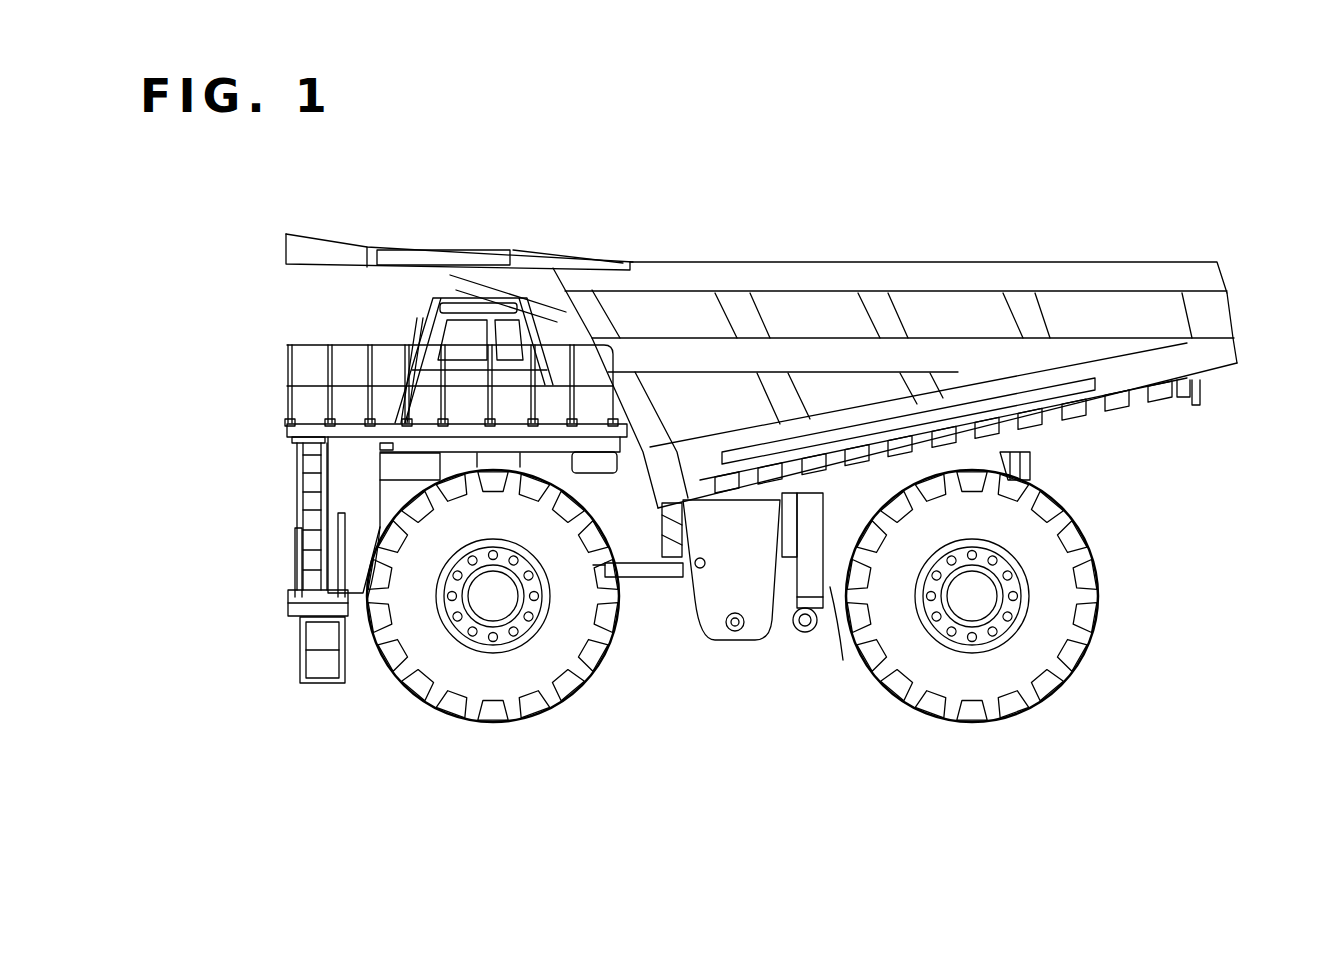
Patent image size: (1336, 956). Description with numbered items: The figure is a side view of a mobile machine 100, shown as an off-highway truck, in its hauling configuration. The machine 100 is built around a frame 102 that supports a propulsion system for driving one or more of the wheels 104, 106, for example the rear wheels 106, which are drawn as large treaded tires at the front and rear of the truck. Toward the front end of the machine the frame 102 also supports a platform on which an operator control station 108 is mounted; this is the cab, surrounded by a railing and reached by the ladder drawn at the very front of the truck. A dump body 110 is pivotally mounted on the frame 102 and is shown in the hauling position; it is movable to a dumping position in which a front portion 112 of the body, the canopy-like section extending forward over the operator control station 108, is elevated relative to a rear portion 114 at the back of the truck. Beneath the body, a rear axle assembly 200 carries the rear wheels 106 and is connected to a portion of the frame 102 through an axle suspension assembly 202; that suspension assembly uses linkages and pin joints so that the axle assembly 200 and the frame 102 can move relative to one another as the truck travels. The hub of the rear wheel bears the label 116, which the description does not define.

The mobile machine 100 is at (350, 752).
The frame 102 is at (833, 600).
The wheels 104 is at (580, 690).
The rear wheels 106 is at (990, 722).
The operator control station 108 is at (460, 330).
The dump body 110 is at (848, 272).
The front portion 112 is at (555, 257).
The rear portion 114 is at (1192, 278).
The wheel rim hub 116 is at (1022, 625).
The rear axle assembly 200 is at (1100, 539).
The axle suspension assembly 202 is at (1077, 497).